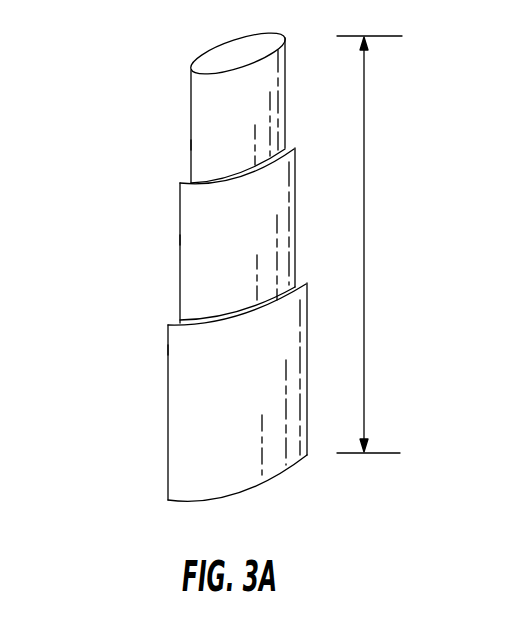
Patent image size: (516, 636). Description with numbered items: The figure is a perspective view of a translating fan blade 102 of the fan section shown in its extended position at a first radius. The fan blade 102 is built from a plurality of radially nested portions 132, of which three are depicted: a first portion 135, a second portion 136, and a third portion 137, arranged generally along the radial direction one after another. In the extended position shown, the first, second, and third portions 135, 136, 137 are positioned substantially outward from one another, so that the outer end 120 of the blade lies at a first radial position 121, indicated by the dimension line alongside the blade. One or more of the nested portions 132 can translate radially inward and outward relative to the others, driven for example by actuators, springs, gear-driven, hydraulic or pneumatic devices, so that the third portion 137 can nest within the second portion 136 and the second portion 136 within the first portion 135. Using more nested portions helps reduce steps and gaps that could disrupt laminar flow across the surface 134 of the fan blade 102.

The translating fan blade 102 is at (88, 144).
The outer end 120 is at (227, 62).
The first radial position 121 is at (365, 156).
The plurality of radially nested portions 132 is at (198, 138).
The surface 134 is at (193, 442).
The first portion 135 is at (190, 378).
The second portion 136 is at (283, 255).
The third portion 137 is at (275, 120).